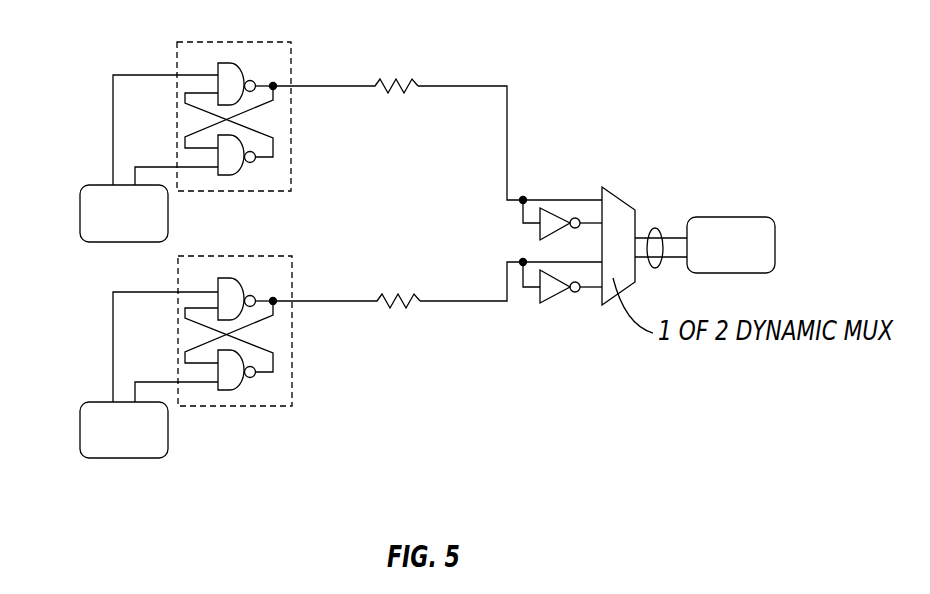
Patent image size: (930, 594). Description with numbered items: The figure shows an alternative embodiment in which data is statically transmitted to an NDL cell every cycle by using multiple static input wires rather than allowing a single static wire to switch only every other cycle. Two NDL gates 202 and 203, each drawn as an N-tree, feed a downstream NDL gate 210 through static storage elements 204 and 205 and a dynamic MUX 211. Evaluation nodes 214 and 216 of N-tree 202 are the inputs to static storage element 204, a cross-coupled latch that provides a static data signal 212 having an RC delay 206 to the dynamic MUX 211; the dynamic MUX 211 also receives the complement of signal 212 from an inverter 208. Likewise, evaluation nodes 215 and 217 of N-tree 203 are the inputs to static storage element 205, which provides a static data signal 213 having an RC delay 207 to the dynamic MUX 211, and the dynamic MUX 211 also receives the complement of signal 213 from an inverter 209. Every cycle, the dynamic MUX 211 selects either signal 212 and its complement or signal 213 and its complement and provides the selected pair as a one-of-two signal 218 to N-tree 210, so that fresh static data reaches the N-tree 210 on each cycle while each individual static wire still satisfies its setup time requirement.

The NDL gate 202 is at (122, 458).
The NDL gate 203 is at (122, 242).
The static storage element 204 is at (267, 406).
The static storage element 205 is at (272, 191).
The RC delay 206 is at (420, 300).
The RC delay 207 is at (418, 85).
The inverter 208 is at (543, 304).
The inverter 209 is at (547, 205).
The NDL gate 210 is at (775, 245).
The dynamic MUX 211 is at (634, 285).
The static data signal 212 is at (462, 302).
The static data signal 213 is at (507, 118).
The evaluation node 214 is at (113, 313).
The evaluation node 215 is at (113, 92).
The evaluation node 216 is at (145, 379).
The evaluation node 217 is at (145, 164).
The 1-of-2 signal 218 is at (655, 228).